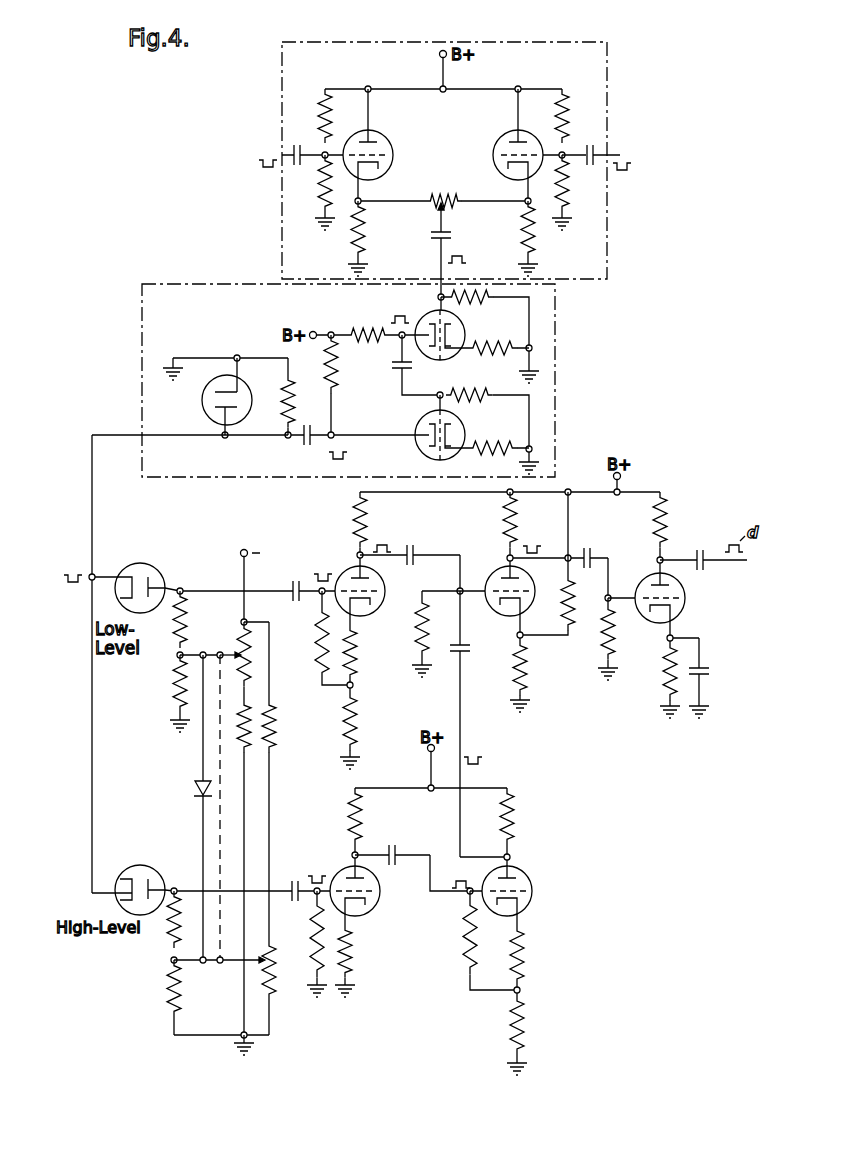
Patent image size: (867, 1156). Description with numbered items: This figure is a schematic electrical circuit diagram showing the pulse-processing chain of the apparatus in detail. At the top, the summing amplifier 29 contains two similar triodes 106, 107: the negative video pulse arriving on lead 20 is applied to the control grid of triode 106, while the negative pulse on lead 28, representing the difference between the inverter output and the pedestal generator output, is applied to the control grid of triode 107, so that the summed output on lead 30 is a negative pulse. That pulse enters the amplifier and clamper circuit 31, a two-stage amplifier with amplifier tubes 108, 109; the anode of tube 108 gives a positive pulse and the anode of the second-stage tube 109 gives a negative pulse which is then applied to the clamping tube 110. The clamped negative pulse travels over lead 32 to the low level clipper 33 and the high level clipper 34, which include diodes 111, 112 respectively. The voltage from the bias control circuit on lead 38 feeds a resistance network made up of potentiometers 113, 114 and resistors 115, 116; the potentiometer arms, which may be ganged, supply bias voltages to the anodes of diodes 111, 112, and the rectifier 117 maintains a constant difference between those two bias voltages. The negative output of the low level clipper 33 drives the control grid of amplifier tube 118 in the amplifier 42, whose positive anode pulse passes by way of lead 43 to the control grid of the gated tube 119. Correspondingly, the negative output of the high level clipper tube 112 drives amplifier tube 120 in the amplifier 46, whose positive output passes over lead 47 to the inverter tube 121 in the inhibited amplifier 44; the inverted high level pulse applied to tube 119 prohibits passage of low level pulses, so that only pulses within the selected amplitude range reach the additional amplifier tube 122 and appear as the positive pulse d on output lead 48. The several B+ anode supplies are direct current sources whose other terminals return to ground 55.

The lead 20 is at (264, 156).
The lead 28 is at (617, 157).
The summing amplifier 29 is at (607, 58).
The lead 30 is at (436, 265).
The amplifier and clamper circuit 31 is at (131, 292).
The lead 32 is at (104, 432).
The low level clipper 33 is at (147, 573).
The high level clipper 34 is at (147, 879).
The lead 38 is at (242, 554).
The amplifier 42 is at (378, 604).
The lead 43 is at (401, 552).
The inhibited amplifier 44 is at (524, 841).
The amplifier 46 is at (373, 894).
The lead 47 is at (382, 847).
The lead 48 is at (720, 562).
The ground 55 is at (318, 229).
The triode 106 is at (384, 138).
The triode 107 is at (500, 138).
The amplifier tube 108 is at (459, 320).
The amplifier tube 109 is at (419, 424).
The clamping tube 110 is at (204, 410).
The diode 111 is at (139, 567).
The diode 112 is at (152, 872).
The potentiometer 113 is at (238, 650).
The potentiometer 114 is at (271, 952).
The resistor 115 is at (248, 709).
The resistor 116 is at (272, 731).
The rectifier 117 is at (194, 791).
The amplifier tube 118 is at (385, 594).
The gated tube 119 is at (498, 575).
The amplifier tube 120 is at (375, 875).
The inverter tube 121 is at (527, 877).
The amplifier tube 122 is at (649, 580).